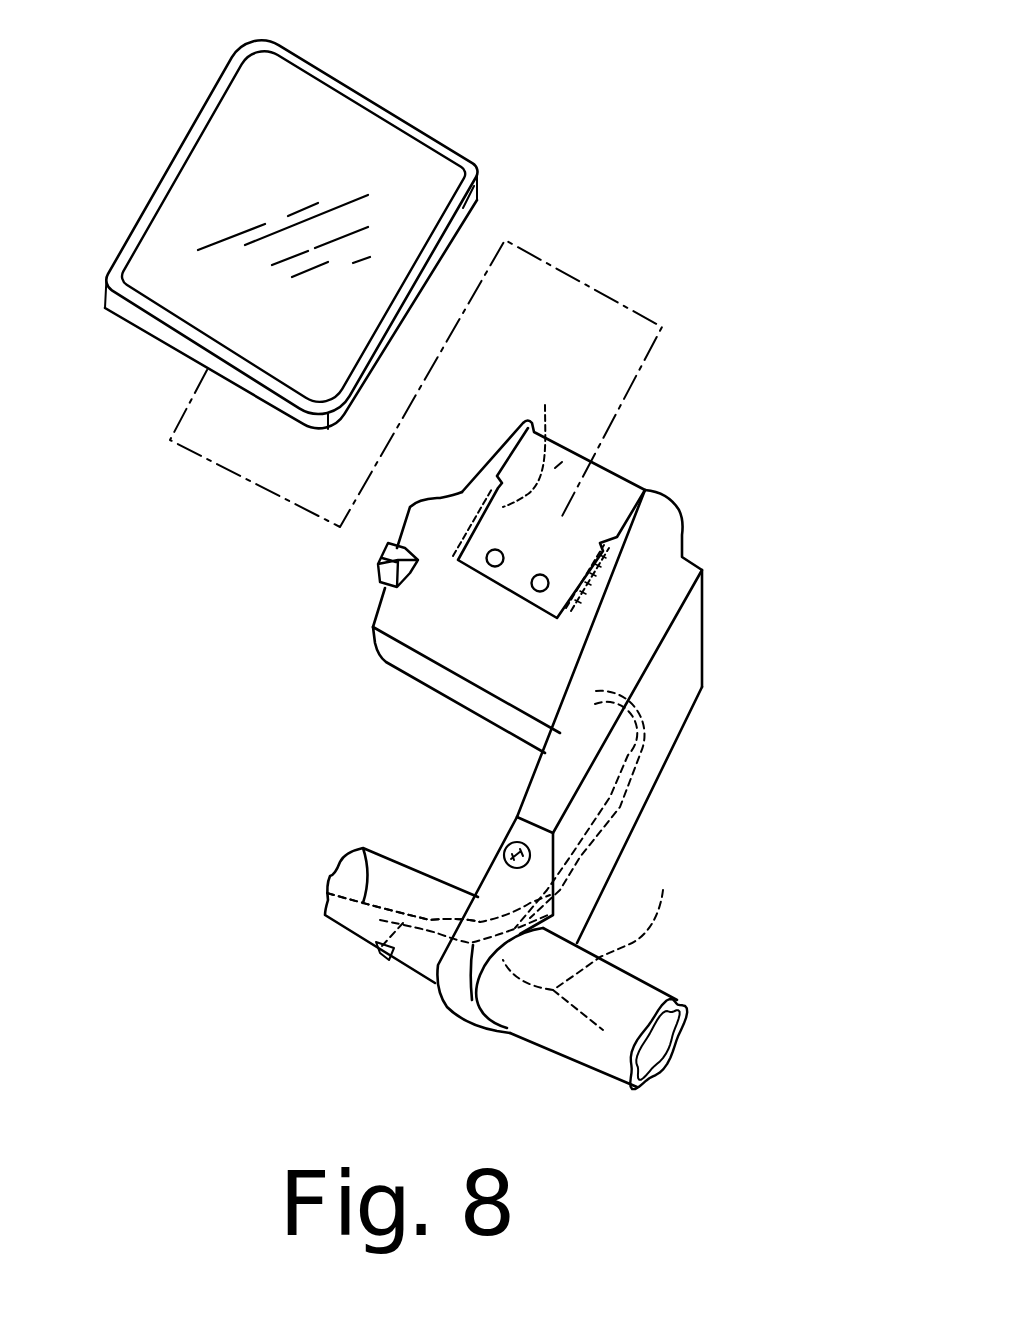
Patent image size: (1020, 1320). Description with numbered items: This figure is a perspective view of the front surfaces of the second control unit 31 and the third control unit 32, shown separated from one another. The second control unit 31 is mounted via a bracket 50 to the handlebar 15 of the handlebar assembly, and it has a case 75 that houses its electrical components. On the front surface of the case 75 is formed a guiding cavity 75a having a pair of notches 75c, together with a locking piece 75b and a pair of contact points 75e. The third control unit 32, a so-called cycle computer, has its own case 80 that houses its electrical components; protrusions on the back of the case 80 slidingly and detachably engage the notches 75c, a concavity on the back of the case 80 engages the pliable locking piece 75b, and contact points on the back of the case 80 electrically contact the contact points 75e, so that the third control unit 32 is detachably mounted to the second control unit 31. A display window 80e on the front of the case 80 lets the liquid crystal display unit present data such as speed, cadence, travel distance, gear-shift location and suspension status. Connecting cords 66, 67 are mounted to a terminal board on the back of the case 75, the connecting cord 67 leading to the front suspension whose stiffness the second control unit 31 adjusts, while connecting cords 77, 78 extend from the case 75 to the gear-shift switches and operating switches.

The case 80 is at (378, 95).
The display window 80e is at (408, 173).
The third control unit 32 is at (463, 208).
The second control unit 31 is at (682, 513).
The case 75 is at (658, 533).
The guiding cavity 75a is at (555, 468).
The locking piece 75b is at (378, 575).
The notches 75c is at (539, 439).
The contact points 75e is at (505, 548).
The bracket 50 is at (680, 683).
The connecting cord 66 is at (480, 922).
The connecting cord 67 is at (480, 922).
The connecting cord 78 is at (362, 857).
The connecting cord 77 is at (593, 941).
The handlebar 15 is at (628, 987).